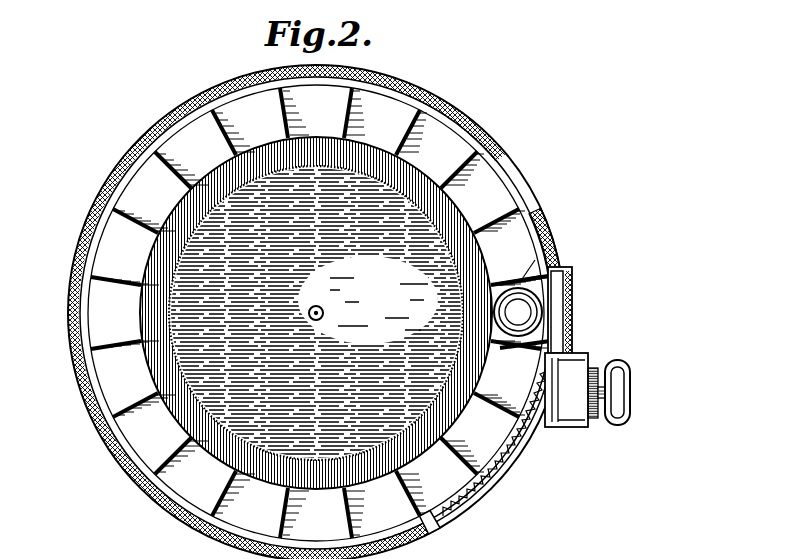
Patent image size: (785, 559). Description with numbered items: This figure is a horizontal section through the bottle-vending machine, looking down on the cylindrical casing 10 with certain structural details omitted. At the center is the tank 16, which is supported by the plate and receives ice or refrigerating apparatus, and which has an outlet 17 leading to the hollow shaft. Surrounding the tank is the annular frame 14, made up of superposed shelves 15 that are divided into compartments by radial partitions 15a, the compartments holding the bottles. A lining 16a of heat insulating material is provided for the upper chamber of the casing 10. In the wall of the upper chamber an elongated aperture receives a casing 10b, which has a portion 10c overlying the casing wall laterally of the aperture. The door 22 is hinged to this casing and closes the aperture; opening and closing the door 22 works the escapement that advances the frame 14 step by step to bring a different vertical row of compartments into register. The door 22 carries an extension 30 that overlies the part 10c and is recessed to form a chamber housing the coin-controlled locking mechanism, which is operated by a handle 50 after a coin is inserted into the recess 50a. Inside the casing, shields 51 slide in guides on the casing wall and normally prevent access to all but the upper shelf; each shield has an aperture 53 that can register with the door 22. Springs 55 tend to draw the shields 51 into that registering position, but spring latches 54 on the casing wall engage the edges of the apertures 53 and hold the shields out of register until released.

The cylindrical casing 10 is at (96, 417).
The casing 10b is at (552, 273).
The portion of casing 10c is at (549, 428).
The annular frame 14 is at (172, 221).
The shelves 15 is at (117, 247).
The radial partitions 15a is at (555, 257).
The tank 16 is at (168, 314).
The lining of heat insulating material 16a is at (142, 481).
The outlet 17 is at (322, 311).
The door 22 is at (576, 292).
The extension 30 is at (579, 427).
The handle 50 is at (632, 402).
The recess 50a is at (606, 390).
The shields 51 is at (563, 318).
The aperture 53 is at (546, 240).
The spring latches 54 is at (519, 194).
The springs 55 is at (490, 472).